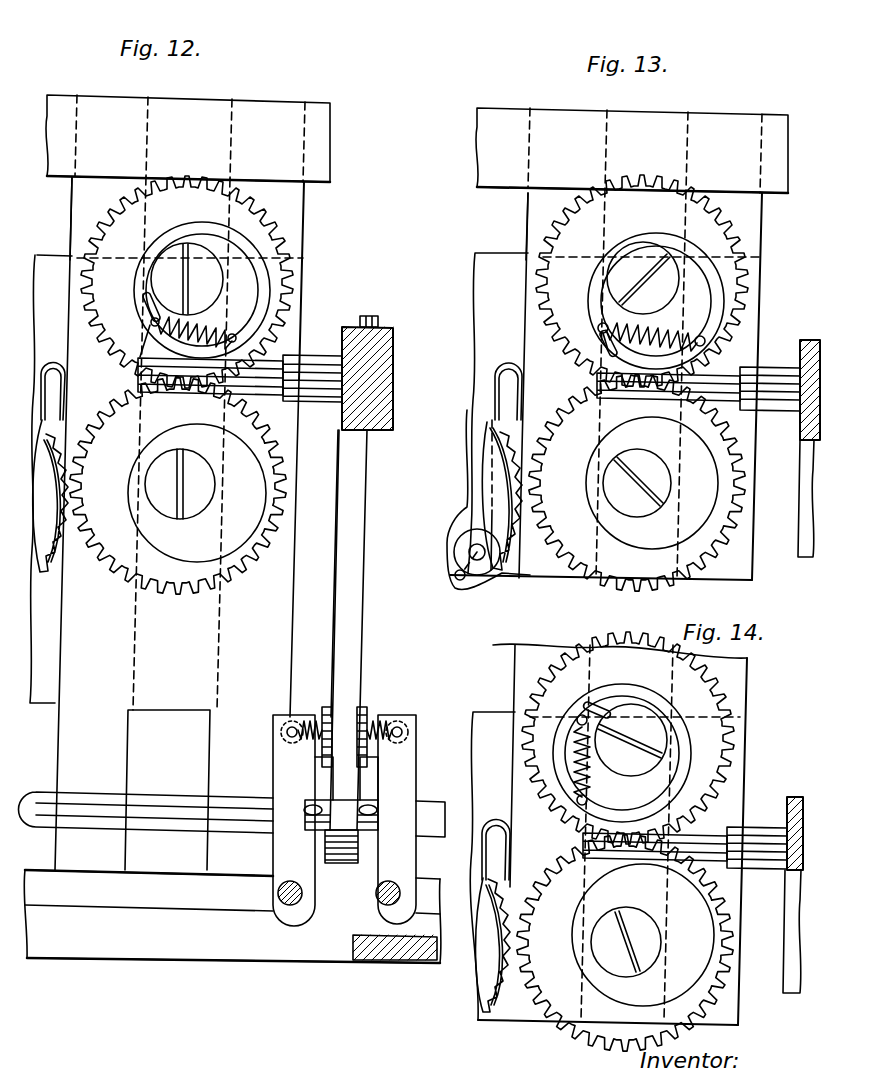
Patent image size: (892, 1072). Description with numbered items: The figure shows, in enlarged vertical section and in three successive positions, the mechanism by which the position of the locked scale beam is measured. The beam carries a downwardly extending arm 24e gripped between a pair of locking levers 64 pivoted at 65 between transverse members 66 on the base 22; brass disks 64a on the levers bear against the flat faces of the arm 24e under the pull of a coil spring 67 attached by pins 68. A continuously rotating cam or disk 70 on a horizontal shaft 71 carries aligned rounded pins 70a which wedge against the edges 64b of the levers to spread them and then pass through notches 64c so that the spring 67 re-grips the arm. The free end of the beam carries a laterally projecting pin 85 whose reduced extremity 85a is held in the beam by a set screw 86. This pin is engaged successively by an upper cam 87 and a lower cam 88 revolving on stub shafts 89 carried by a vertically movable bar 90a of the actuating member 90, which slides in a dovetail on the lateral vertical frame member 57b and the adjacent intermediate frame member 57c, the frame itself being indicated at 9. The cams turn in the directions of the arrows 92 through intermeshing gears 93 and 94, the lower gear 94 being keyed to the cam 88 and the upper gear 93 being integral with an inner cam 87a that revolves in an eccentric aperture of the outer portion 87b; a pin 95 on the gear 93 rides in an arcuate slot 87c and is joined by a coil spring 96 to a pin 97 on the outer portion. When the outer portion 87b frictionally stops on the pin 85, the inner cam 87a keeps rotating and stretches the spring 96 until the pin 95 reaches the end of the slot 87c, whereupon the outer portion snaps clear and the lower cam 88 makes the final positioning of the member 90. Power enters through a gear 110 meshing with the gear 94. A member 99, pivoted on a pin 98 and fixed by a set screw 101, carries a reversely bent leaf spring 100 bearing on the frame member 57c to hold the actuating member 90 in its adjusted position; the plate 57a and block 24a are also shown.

In FIG. 13, the frame 9 is at (717, 164).
In FIG. 12, the base 22 is at (93, 948).
In FIG. 12, the bearing block 24a is at (393, 413).
In FIG. 13, the bearing block 24a is at (823, 369).
In FIG. 14, the bearing block 24a is at (806, 814).
In FIG. 12, the downwardly extending arm 24e is at (357, 581).
In FIG. 13, the downwardly extending arm 24e is at (799, 558).
In FIG. 14, the downwardly extending arm 24e is at (790, 994).
In FIG. 12, the top plate 57a is at (209, 123).
In FIG. 13, the top plate 57a is at (646, 135).
In FIG. 12, the lateral vertical frame member 57b is at (302, 198).
In FIG. 13, the lateral vertical frame member 57b is at (752, 212).
In FIG. 14, the lateral vertical frame member 57b is at (750, 662).
In FIG. 12, the intermediate vertical frame member 57c is at (100, 190).
In FIG. 13, the intermediate vertical frame member 57c is at (530, 207).
In FIG. 14, the intermediate vertical frame member 57c is at (605, 642).
In FIG. 12, the locking levers 64 is at (273, 777).
In FIG. 12, the disks 64a is at (326, 698).
In FIG. 12, the edges 64b is at (313, 770).
In FIG. 12, the notches 64c is at (313, 841).
In FIG. 12, the pivot 65 is at (290, 906).
In FIG. 12, the transverse members 66 is at (232, 892).
In FIG. 12, the coil spring 67 is at (370, 735).
In FIG. 12, the pins 68 is at (286, 726).
In FIG. 12, the cam or disk 70 is at (348, 864).
In FIG. 12, the pins 70a is at (305, 812).
In FIG. 12, the horizontal shaft 71 is at (162, 796).
In FIG. 12, the pin 85 is at (290, 353).
In FIG. 13, the pin 85 is at (723, 373).
In FIG. 14, the pin 85 is at (713, 833).
In FIG. 12, the reduced extremity 85a is at (397, 374).
In FIG. 12, the set screw 86 is at (387, 303).
In FIG. 12, the upper cam 87 is at (176, 219).
In FIG. 13, the upper cam 87 is at (653, 226).
In FIG. 14, the upper cam 87 is at (697, 720).
In FIG. 12, the inner cam 87a is at (243, 260).
In FIG. 13, the inner cam 87a is at (692, 275).
In FIG. 14, the inner cam 87a is at (673, 750).
In FIG. 12, the outer portion of the cam 87b is at (147, 252).
In FIG. 13, the outer portion of the cam 87b is at (713, 290).
In FIG. 14, the outer portion of the cam 87b is at (690, 762).
In FIG. 12, the arcuate slot 87c is at (143, 297).
In FIG. 13, the arcuate slot 87c is at (603, 341).
In FIG. 14, the arcuate slot 87c is at (593, 702).
In FIG. 12, the lower cam 88 is at (230, 540).
In FIG. 13, the lower cam 88 is at (627, 547).
In FIG. 14, the lower cam 88 is at (620, 998).
In FIG. 12, the stub shafts 89 is at (207, 253).
In FIG. 13, the stub shafts 89 is at (620, 265).
In FIG. 14, the stub shafts 89 is at (630, 710).
In FIG. 12, the actuating member 90 is at (50, 256).
In FIG. 13, the actuating member 90 is at (480, 253).
In FIG. 14, the actuating member 90 is at (490, 712).
In FIG. 12, the vertically movable bar 90a is at (177, 523).
In FIG. 13, the vertically movable bar 90a is at (645, 579).
In FIG. 14, the vertically movable bar 90a is at (557, 1026).
In FIG. 12, the arrows 92 is at (283, 347).
In FIG. 12, the upper gear 93 is at (270, 230).
In FIG. 13, the upper gear 93 is at (733, 232).
In FIG. 14, the upper gear 93 is at (607, 645).
In FIG. 12, the lower gear 94 is at (118, 570).
In FIG. 13, the lower gear 94 is at (730, 540).
In FIG. 14, the lower gear 94 is at (560, 867).
In FIG. 12, the pin 95 is at (152, 324).
In FIG. 13, the pin 95 is at (590, 333).
In FIG. 14, the pin 95 is at (577, 717).
In FIG. 12, the coil spring 96 is at (187, 343).
In FIG. 13, the coil spring 96 is at (652, 343).
In FIG. 14, the coil spring 96 is at (593, 772).
In FIG. 12, the pin 97 is at (230, 342).
In FIG. 13, the pin 97 is at (704, 339).
In FIG. 14, the pin 97 is at (580, 804).
In FIG. 13, the pin 98 is at (480, 561).
In FIG. 13, the member 99 is at (472, 538).
In FIG. 12, the reversely bent leaf spring 100 is at (55, 371).
In FIG. 13, the reversely bent leaf spring 100 is at (505, 363).
In FIG. 14, the reversely bent leaf spring 100 is at (493, 820).
In FIG. 13, the set screw 101 is at (458, 572).
In FIG. 12, the gear 110 is at (68, 543).
In FIG. 13, the gear 110 is at (488, 455).
In FIG. 14, the gear 110 is at (483, 985).